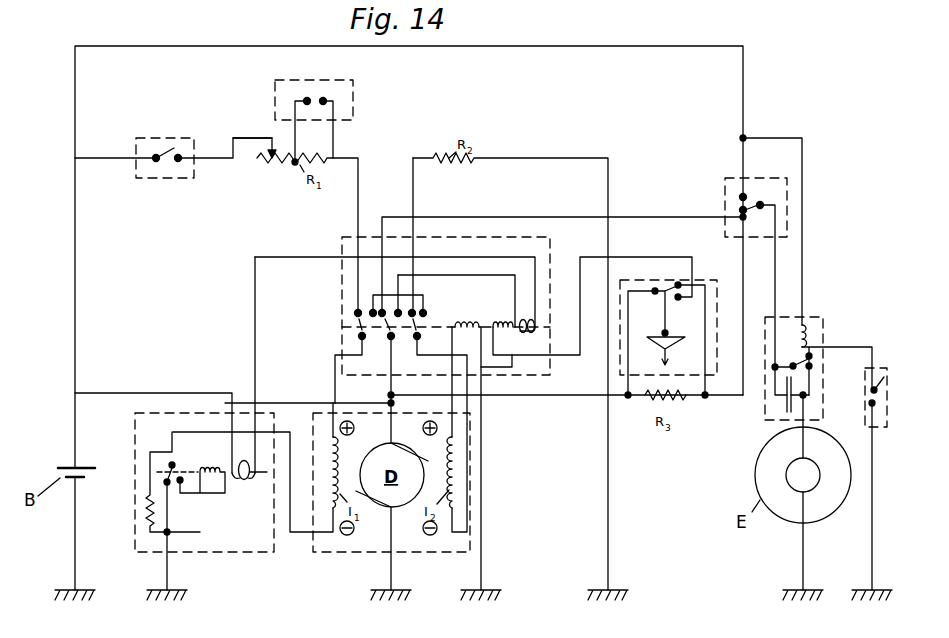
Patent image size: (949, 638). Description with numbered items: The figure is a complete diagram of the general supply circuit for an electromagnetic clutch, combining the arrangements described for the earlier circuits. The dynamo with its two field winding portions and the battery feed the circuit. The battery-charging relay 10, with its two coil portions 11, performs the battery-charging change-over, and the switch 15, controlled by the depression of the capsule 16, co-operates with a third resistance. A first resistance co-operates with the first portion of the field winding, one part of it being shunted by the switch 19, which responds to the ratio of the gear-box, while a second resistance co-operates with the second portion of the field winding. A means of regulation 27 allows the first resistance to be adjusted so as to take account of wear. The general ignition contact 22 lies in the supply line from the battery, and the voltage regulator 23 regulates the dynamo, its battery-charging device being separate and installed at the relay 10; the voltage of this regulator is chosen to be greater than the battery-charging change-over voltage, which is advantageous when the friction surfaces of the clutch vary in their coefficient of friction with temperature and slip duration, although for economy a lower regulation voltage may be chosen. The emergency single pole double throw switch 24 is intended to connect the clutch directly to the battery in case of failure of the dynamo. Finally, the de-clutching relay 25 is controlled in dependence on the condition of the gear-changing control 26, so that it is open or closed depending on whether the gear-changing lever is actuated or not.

The battery-charging relay 10 is at (341, 324).
The coil portions 11 is at (505, 306).
The switch 15 is at (665, 289).
The capsule 16 is at (672, 344).
The switch 19 is at (312, 97).
The general ignition contact 22 is at (168, 154).
The voltage regulator 23 is at (232, 555).
The emergency single pole double throw switch 24 is at (749, 196).
The de-clutching relay 25 is at (825, 322).
The gear-changing control 26 is at (888, 390).
The means of regulation of the resistance R1 27 is at (272, 138).